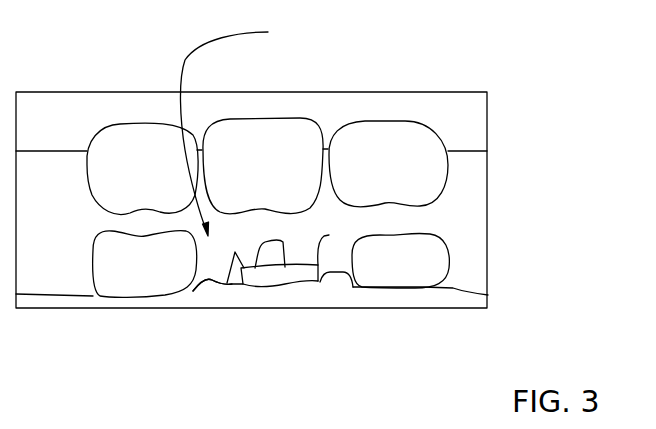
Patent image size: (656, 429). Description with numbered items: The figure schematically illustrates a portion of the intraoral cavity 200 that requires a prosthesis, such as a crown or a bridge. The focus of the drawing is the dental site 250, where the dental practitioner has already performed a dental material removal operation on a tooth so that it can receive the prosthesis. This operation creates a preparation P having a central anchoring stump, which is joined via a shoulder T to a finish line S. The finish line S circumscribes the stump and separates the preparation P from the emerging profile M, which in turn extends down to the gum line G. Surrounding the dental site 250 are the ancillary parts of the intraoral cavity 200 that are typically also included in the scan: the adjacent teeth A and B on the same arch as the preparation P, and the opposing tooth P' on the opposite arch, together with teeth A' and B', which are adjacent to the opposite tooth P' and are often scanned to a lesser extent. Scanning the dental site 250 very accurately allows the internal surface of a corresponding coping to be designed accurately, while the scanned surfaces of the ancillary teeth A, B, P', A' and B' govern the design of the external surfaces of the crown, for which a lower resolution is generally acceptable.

The intraoral cavity 200 is at (488, 213).
The dental site 250 is at (244, 129).
The tooth A' is at (142, 168).
The opposite tooth P' is at (263, 166).
The tooth B' is at (388, 164).
The tooth A is at (145, 263).
The tooth B is at (400, 260).
The gum line G is at (193, 289).
The shoulder T is at (242, 270).
The preparation P is at (279, 299).
The finish line S is at (329, 245).
The emerging profile M is at (353, 290).